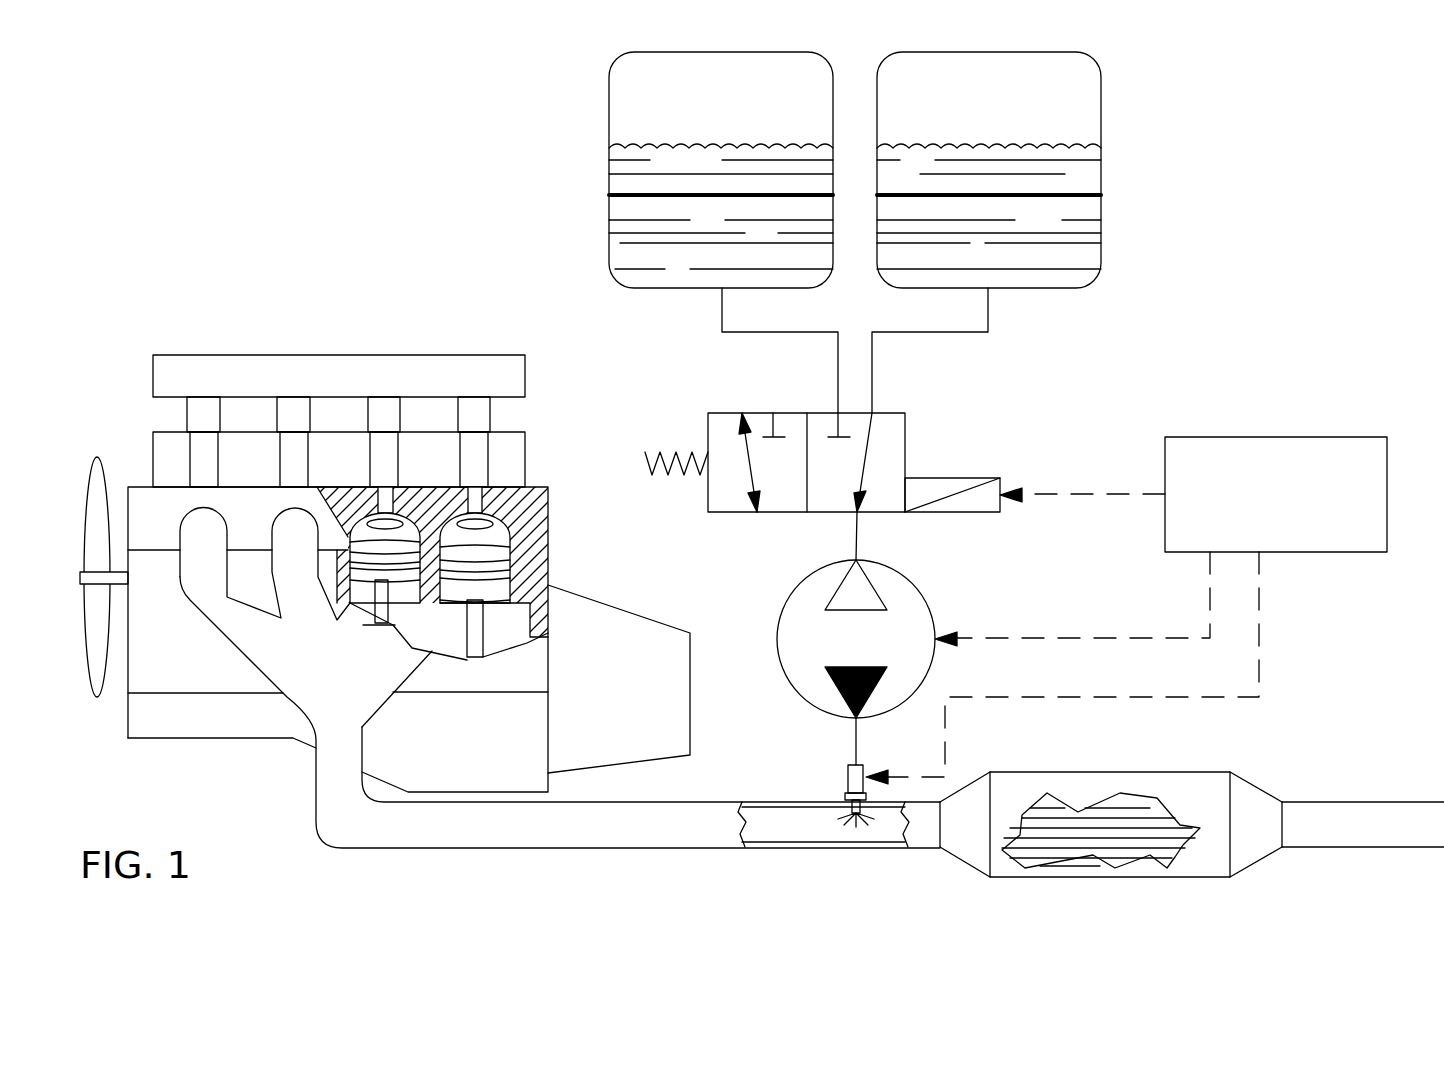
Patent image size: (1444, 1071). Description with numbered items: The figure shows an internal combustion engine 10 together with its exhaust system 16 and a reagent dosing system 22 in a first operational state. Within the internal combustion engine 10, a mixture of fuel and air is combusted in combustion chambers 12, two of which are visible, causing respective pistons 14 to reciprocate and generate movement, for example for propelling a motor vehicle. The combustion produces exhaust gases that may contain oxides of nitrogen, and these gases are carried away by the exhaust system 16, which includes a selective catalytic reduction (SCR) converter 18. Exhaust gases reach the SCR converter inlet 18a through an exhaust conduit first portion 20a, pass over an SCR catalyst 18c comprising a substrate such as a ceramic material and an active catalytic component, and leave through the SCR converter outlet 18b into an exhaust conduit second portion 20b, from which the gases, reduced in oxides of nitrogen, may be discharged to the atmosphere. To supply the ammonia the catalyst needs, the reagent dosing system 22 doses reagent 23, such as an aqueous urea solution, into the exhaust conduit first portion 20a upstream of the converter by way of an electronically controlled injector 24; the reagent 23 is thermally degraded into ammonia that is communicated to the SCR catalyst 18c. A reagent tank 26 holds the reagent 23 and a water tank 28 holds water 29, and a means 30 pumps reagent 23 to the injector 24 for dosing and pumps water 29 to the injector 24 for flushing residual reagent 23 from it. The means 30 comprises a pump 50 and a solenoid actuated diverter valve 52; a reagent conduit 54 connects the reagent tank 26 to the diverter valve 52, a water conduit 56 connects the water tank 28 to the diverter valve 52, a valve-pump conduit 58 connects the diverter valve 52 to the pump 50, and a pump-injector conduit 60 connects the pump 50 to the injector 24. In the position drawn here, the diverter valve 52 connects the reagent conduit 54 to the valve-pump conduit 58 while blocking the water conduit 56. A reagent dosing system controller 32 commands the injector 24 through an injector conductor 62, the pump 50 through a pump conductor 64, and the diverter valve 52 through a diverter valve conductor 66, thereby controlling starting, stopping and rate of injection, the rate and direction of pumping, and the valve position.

The internal combustion engine 10 is at (385, 574).
The combustion chamber 12 is at (492, 558).
The pistons 14 is at (410, 565).
The exhaust system 16 is at (812, 741).
The selective catalytic reduction (SCR) converter 18 is at (1119, 808).
The SCR converter inlet 18a is at (934, 822).
The SCR converter outlet 18b is at (1282, 824).
The SCR catalyst 18c is at (1062, 830).
The exhaust conduit first portion 20a is at (724, 840).
The exhaust conduit second portion 20b is at (1388, 840).
The reagent dosing system 22 is at (772, 748).
The reagent 23 is at (1068, 204).
The injector 24 is at (848, 777).
The reagent tank 26 is at (1058, 170).
The water tank 28 is at (656, 170).
The water 29 is at (622, 220).
The means for pumping 30 is at (835, 440).
The reagent dosing system controller 32 is at (1261, 507).
The pump 50 is at (840, 652).
The diverter valve 52 is at (708, 413).
The reagent conduit 54 is at (960, 333).
The water conduit 56 is at (745, 333).
The valve-pump conduit 58 is at (857, 530).
The pump-injector conduit 60 is at (857, 752).
The injector conductor 62 is at (1259, 647).
The pump conductor 64 is at (1210, 598).
The diverter valve conductor 66 is at (1082, 494).